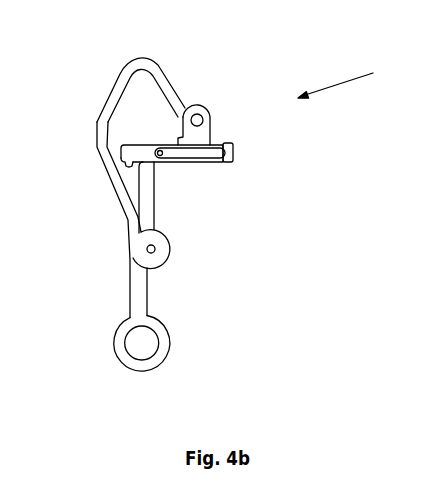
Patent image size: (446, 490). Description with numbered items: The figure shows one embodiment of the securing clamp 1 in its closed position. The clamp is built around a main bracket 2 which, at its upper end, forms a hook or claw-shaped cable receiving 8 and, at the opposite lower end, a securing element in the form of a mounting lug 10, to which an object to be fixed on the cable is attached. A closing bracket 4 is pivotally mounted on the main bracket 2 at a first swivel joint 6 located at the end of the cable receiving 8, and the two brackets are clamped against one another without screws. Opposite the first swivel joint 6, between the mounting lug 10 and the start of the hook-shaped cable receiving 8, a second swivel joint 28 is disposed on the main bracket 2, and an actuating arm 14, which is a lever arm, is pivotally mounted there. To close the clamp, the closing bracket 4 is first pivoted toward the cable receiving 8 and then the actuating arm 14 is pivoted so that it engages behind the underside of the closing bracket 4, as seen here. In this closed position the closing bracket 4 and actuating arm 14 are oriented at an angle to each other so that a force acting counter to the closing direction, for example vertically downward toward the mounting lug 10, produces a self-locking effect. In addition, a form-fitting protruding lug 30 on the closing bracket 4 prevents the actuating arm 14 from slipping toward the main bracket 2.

The securing clamp 1 is at (398, 77).
The main bracket 2 is at (98, 142).
The closing bracket 4 is at (202, 150).
The first swivel joint 6 is at (197, 120).
The cable receiving 8 is at (150, 97).
The mounting lug 10 is at (143, 343).
The actuating arm 14 is at (152, 193).
The second swivel joint 28 is at (150, 250).
The protruding lug 30 is at (133, 172).